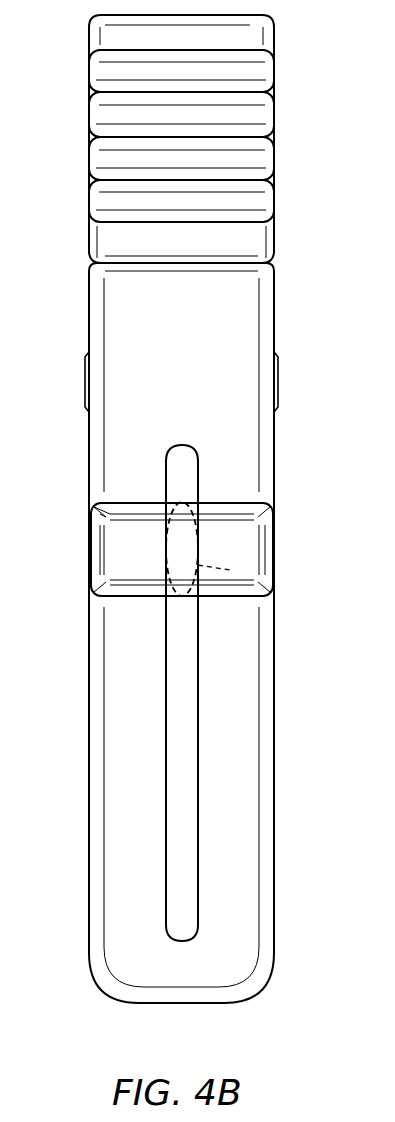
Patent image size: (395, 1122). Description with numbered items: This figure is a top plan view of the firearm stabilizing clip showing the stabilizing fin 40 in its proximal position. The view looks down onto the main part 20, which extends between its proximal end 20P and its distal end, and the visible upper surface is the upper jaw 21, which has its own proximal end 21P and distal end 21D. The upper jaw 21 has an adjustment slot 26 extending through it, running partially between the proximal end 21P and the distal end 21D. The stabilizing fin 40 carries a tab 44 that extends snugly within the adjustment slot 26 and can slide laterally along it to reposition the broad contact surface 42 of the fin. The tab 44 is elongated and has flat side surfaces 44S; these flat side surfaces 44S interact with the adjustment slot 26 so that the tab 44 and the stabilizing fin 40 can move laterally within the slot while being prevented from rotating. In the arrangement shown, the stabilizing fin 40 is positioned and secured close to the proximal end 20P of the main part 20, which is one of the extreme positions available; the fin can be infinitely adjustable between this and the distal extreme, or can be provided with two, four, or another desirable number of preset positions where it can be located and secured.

The main part 20 is at (89, 666).
The upper jaw 21 is at (275, 305).
The proximal end of the main part 20P is at (220, 262).
The proximal end of the upper jaw 21P is at (226, 249).
The distal end of the upper jaw 21D is at (150, 1003).
The adjustment slot 26 is at (196, 710).
The stabilizing fin 40 is at (237, 503).
The broad contact surface 42 is at (127, 503).
The tab 44 is at (198, 540).
The flat side surfaces 44S is at (230, 570).